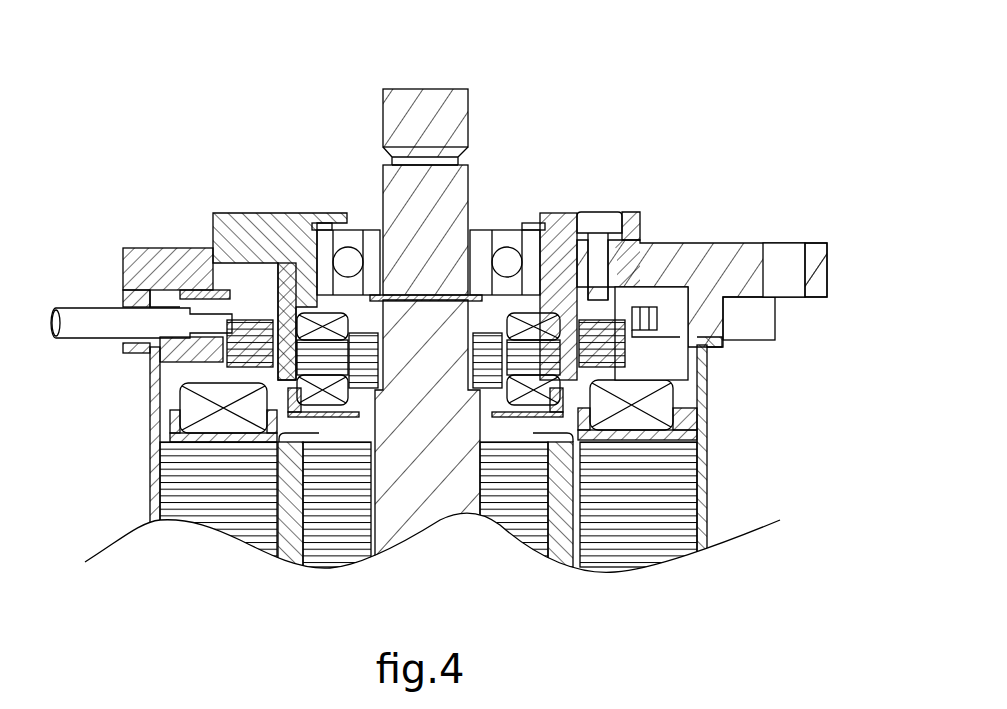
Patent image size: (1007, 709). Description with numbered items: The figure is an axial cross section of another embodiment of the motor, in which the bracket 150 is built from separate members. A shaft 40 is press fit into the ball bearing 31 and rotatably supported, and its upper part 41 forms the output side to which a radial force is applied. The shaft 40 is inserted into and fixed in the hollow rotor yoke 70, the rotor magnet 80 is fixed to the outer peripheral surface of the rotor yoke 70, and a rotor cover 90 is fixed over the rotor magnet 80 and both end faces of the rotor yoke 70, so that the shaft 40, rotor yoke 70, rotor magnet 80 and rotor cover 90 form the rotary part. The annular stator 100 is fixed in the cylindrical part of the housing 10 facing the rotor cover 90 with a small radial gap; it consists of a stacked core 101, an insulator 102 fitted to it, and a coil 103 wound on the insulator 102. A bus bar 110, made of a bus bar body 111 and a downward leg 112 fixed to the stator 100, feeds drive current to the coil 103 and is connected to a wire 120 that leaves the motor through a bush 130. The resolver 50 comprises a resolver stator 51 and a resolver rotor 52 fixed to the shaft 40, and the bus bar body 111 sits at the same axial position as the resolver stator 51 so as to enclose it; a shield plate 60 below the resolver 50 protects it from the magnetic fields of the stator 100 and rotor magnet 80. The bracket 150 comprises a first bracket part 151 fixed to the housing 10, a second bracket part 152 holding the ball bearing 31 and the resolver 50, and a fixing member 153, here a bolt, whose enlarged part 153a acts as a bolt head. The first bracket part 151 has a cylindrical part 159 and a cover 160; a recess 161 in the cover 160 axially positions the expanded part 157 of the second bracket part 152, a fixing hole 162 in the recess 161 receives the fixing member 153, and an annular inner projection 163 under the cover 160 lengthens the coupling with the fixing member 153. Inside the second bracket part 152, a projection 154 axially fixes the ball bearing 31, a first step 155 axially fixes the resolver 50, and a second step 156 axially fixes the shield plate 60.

The housing 10 is at (703, 517).
The ball bearing 31 is at (503, 247).
The shaft 40 is at (413, 513).
The upper part of the shaft 41 is at (455, 100).
The resolver 50 is at (355, 313).
The resolver stator 51 is at (536, 197).
The resolver rotor 52 is at (468, 305).
The shield plate 60 is at (500, 420).
The rotor yoke 70 is at (340, 550).
The rotor magnet 80 is at (297, 550).
The rotor cover 90 is at (278, 543).
The stator 100 is at (683, 488).
The stacked core 101 is at (253, 393).
The insulator 102 is at (152, 477).
The coil 103 is at (190, 412).
The bus bar 110 is at (657, 335).
The bus bar body 111 is at (660, 325).
The leg 112 is at (640, 368).
The wire 120 is at (100, 313).
The bush 130 is at (173, 353).
The bracket 150 is at (256, 214).
The first bracket part 151 is at (750, 260).
The second bracket part 152 is at (262, 230).
The fixing member 153 is at (594, 197).
The enlarged part 153a is at (608, 222).
The projection 154 is at (293, 223).
The first step 155 is at (290, 333).
The second step 156 is at (160, 513).
The expanded part 157 is at (213, 275).
The cylindrical part 159 is at (707, 312).
The cover 160 is at (657, 285).
The recess 161 is at (230, 300).
The fixing hole 162 is at (603, 287).
The inner projection 163 is at (235, 260).